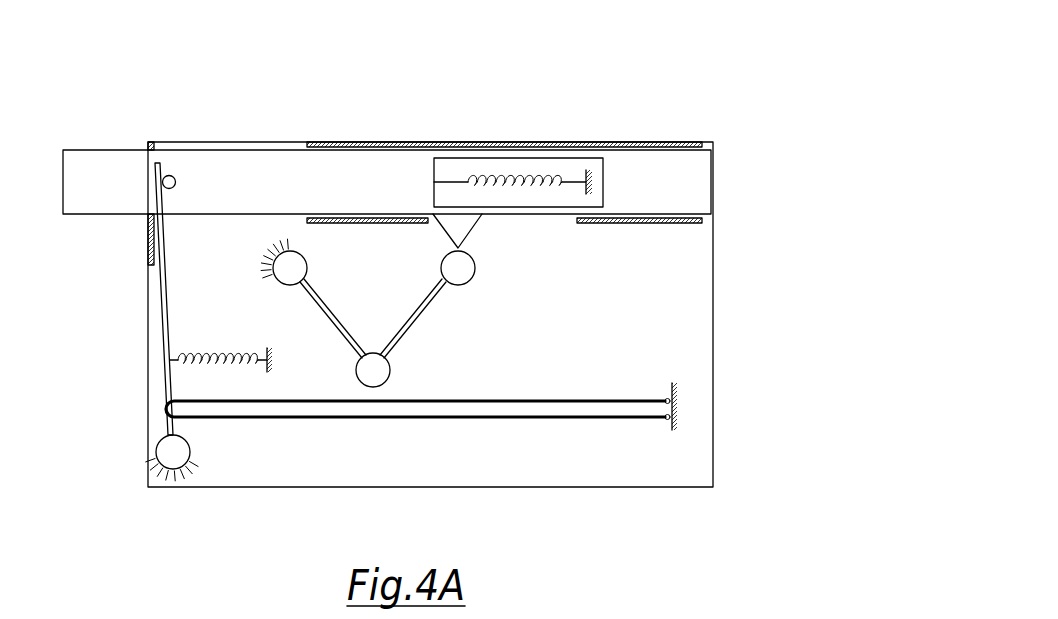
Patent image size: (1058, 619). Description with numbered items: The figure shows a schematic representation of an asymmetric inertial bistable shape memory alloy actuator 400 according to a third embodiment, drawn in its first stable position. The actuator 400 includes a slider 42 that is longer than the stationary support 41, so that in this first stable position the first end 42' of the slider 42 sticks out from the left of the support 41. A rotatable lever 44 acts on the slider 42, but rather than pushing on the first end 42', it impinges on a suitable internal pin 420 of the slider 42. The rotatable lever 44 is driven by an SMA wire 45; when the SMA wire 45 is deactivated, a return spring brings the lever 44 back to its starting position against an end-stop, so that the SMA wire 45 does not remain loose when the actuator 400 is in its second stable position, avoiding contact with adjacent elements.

The inertial bistable actuator 400 is at (549, 124).
The stationary support 41 is at (633, 470).
The slider 42 is at (429, 160).
The first end 42' is at (96, 138).
The internal pin 420 is at (172, 180).
The rotatable lever 44 is at (165, 340).
The SMA wire 45 is at (560, 400).